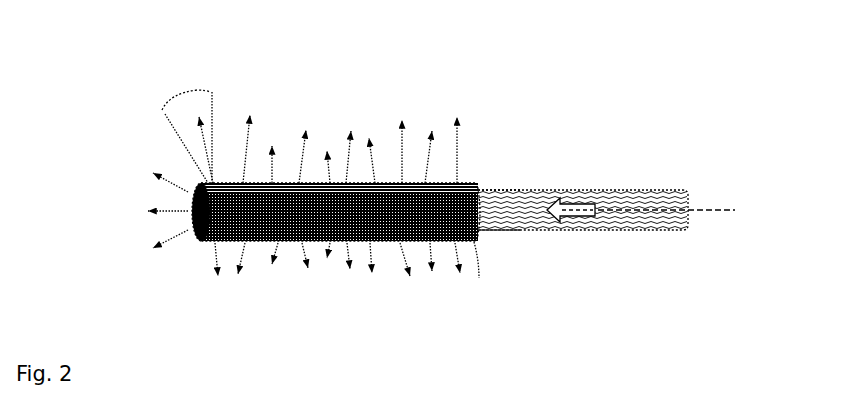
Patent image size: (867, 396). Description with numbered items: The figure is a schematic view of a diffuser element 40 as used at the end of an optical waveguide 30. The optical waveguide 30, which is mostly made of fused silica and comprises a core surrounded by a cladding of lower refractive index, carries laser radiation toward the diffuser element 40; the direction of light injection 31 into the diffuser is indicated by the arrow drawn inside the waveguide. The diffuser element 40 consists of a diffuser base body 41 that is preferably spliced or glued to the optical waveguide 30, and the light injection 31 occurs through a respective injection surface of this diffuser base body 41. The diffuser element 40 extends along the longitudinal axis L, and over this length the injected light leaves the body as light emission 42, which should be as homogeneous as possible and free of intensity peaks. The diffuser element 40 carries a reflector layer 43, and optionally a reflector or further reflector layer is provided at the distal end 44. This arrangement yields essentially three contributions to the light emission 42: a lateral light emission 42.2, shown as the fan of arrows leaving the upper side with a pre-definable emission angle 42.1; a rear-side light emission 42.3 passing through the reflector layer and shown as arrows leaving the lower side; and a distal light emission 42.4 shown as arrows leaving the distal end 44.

The optical waveguide 30 is at (630, 229).
The light injection 31 is at (583, 208).
The diffuser element 40 is at (530, 228).
The diffuser base body 41 is at (492, 233).
The light emission 42 is at (481, 185).
The emission angle 42.1 is at (205, 92).
The lateral light emission 42.2 is at (463, 116).
The rear-side light emission 42.3 is at (467, 276).
The distal light emission 42.4 is at (145, 163).
The reflector layer 43 is at (477, 273).
The distal end 44 is at (190, 234).
The longitudinal axis L is at (714, 208).